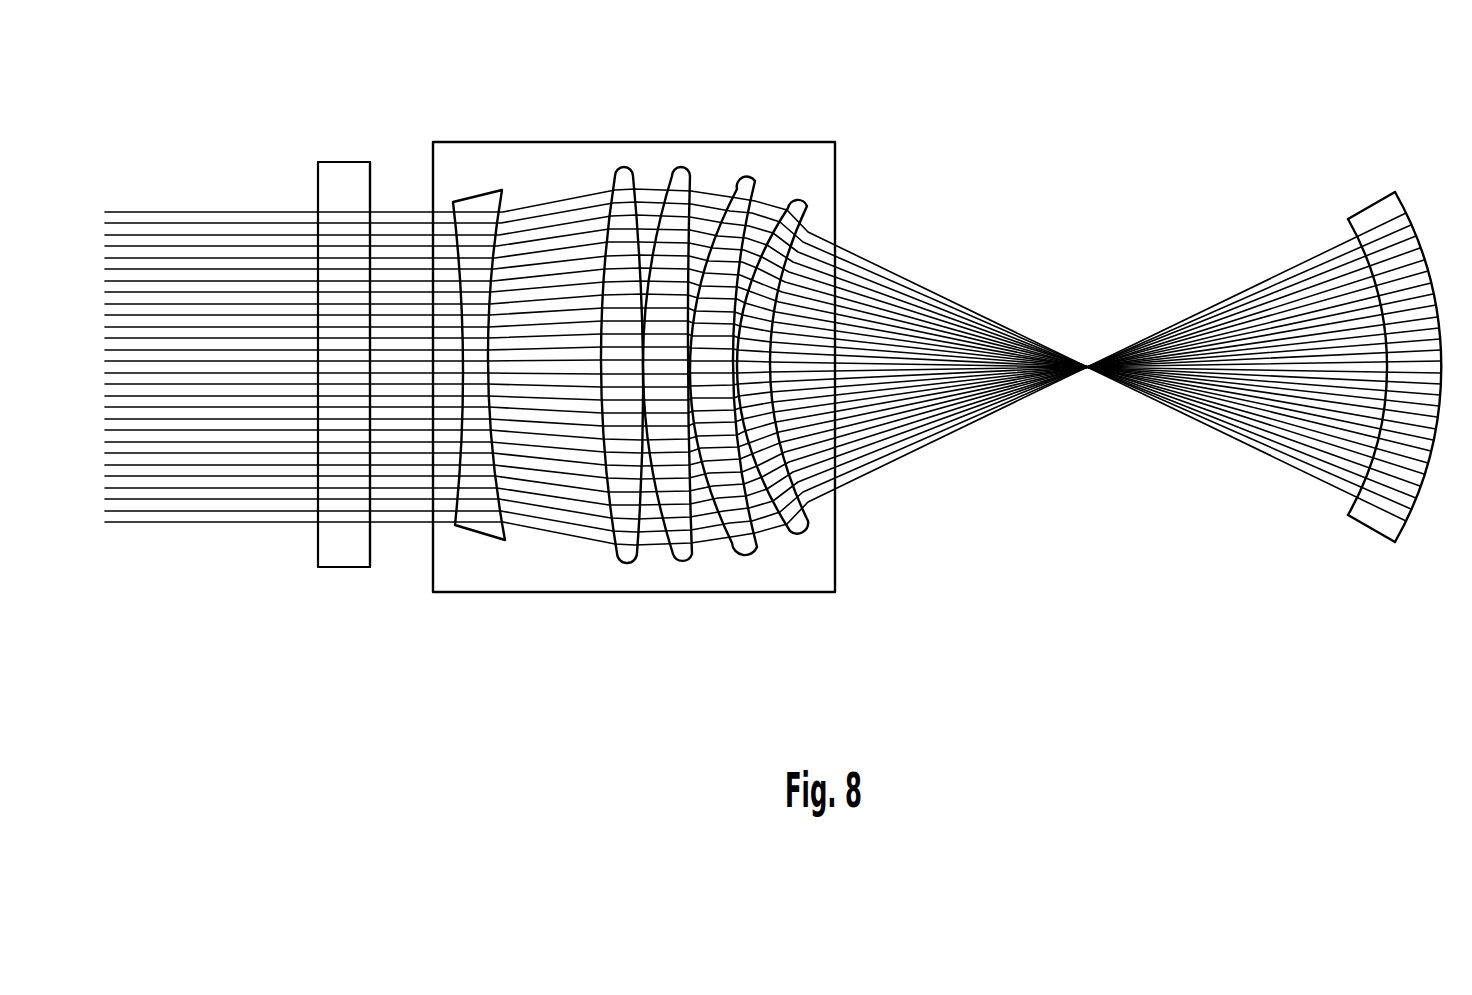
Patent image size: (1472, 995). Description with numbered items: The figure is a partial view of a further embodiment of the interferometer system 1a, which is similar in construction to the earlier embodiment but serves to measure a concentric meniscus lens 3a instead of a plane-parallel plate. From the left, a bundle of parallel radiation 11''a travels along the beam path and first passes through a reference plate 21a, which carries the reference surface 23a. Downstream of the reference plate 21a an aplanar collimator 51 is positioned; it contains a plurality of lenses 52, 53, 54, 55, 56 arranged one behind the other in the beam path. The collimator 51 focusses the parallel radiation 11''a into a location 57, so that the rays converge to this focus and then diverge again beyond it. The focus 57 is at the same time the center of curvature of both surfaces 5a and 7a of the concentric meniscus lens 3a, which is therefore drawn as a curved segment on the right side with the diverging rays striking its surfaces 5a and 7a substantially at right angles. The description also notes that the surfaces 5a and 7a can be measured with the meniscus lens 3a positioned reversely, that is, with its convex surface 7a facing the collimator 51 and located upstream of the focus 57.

The interferometer system 1a is at (993, 128).
The parallel radiation 11''a is at (773, 335).
The reference plate 21a is at (330, 162).
The reference surface 23a is at (370, 171).
The aplanar collimator 51 is at (750, 593).
The lens 52 is at (480, 192).
The lens 53 is at (623, 167).
The lens 54 is at (680, 167).
The lens 55 is at (746, 180).
The lens 56 is at (797, 199).
The focus location 57 is at (1087, 367).
The concentric meniscus lens 3a is at (1370, 205).
The surface of the meniscus lens 5a is at (1348, 221).
The convex surface of the meniscus lens 7a is at (1403, 203).